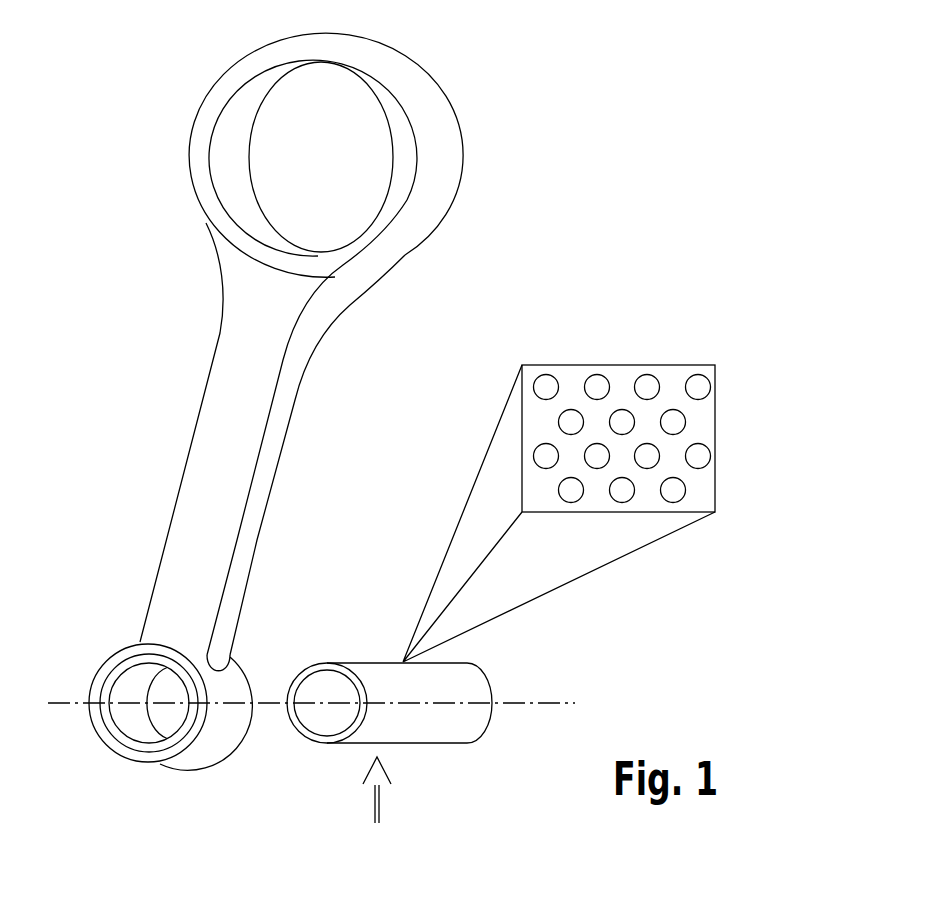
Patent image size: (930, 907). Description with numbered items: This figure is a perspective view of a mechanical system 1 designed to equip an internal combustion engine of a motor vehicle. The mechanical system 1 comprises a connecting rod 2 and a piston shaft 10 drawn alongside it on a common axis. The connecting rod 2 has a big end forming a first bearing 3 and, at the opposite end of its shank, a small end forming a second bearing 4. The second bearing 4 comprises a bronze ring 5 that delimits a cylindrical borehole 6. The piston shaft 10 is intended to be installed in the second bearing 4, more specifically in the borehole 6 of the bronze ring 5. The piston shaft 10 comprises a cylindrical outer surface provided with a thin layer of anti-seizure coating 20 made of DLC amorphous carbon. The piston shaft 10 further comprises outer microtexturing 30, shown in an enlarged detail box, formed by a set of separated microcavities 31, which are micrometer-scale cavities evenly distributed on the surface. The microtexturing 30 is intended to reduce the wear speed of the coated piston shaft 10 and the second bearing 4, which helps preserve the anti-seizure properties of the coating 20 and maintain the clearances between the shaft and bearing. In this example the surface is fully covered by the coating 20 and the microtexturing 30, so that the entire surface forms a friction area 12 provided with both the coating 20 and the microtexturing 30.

The mechanical system 1 is at (623, 190).
The connecting rod 2 is at (167, 392).
The first bearing 3 is at (203, 110).
The second bearing 4 is at (125, 760).
The bronze ring 5 is at (117, 723).
The cylindrical borehole 6 is at (131, 688).
The piston shaft 10 is at (452, 717).
The friction area 12 is at (392, 652).
The anti-seizure coating 20 is at (368, 677).
The outer microtexturing 30 is at (708, 423).
The microcavities 31 is at (597, 388).